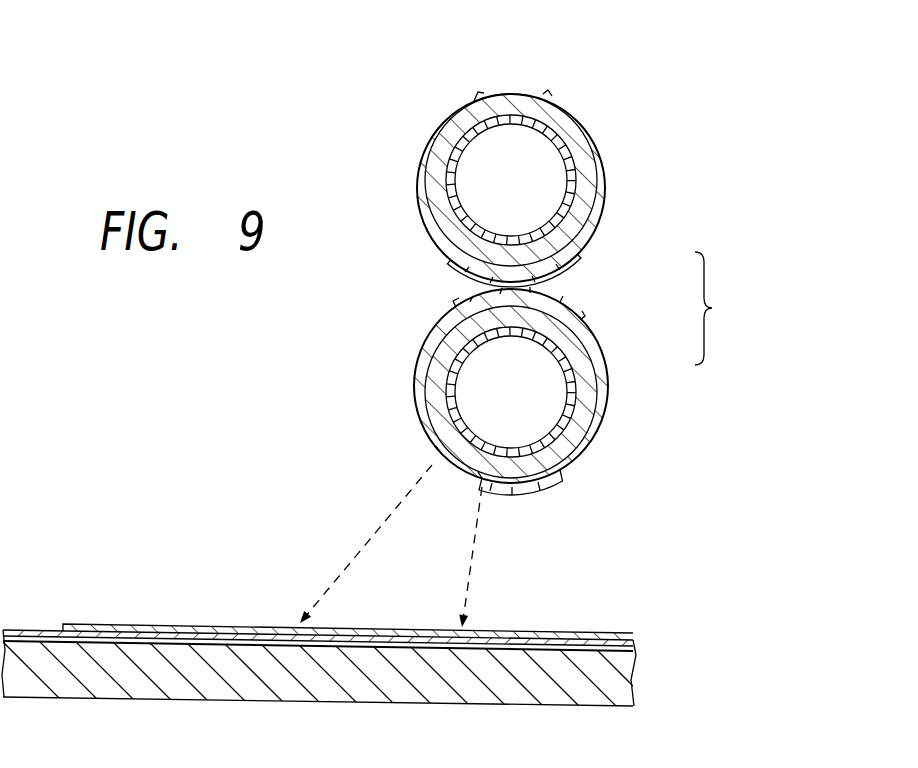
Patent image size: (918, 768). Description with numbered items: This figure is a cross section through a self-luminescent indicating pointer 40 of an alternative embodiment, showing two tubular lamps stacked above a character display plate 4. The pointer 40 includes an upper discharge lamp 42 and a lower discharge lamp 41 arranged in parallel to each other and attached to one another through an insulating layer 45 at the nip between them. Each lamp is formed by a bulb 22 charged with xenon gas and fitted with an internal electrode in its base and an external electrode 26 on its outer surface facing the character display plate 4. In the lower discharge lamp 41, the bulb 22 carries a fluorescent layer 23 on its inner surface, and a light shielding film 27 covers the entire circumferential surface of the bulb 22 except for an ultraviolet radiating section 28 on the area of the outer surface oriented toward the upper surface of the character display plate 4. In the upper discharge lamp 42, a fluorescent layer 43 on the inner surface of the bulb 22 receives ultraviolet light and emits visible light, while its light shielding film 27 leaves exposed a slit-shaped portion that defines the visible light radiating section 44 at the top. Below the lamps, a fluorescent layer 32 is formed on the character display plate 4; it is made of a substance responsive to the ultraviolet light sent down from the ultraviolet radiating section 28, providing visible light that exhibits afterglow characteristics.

The character display plate 4 is at (590, 628).
The bulb 22 is at (583, 200).
The fluorescent layer 23 is at (577, 387).
The external electrode 26 is at (572, 283).
The light shielding film 27 is at (421, 217).
The ultraviolet radiating section 28 is at (418, 483).
The fluorescent layer 32 is at (168, 623).
The self-luminescent indicating pointer 40 is at (720, 308).
The lower discharge lamp 41 is at (617, 357).
The upper discharge lamp 42 is at (606, 242).
The fluorescent layer 43 is at (573, 160).
The visible light radiating section 44 is at (527, 82).
The insulating layer 45 is at (458, 300).